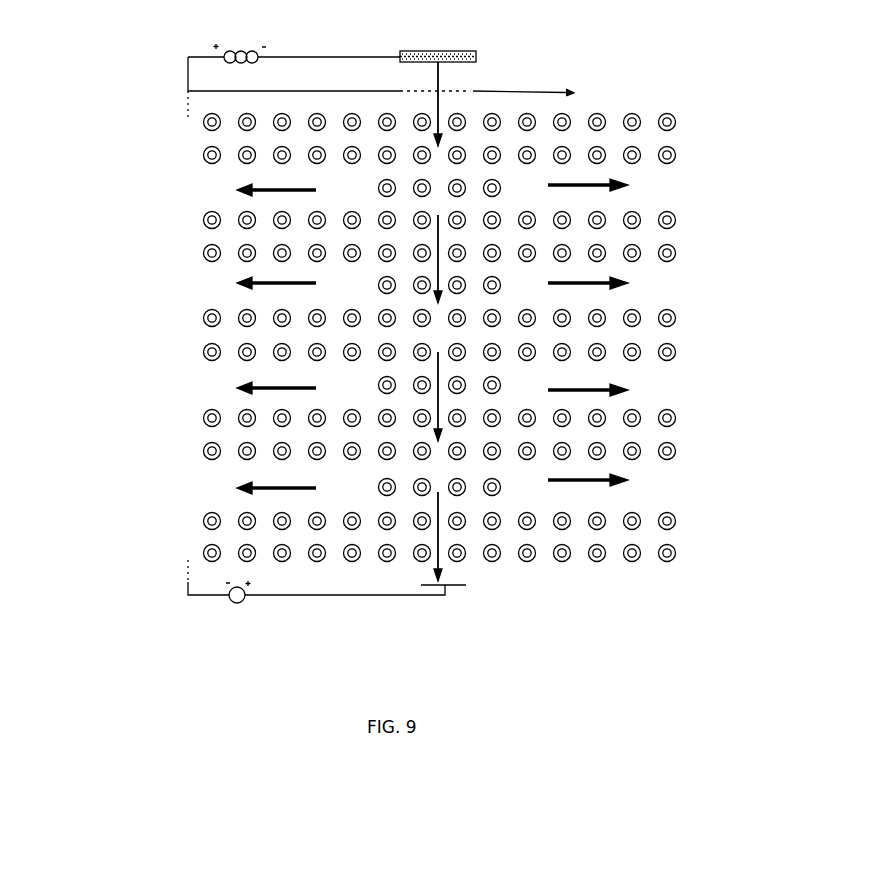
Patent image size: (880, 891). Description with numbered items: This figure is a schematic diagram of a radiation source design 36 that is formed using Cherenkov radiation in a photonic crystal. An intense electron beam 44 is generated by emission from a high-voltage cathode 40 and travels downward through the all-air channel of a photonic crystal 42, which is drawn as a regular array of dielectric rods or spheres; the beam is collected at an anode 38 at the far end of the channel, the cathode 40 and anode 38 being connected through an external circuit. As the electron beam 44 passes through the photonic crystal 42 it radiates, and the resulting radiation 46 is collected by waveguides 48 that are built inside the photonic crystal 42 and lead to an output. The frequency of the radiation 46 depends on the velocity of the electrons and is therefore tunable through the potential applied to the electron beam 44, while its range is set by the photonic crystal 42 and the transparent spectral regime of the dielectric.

The radiation source design 36 is at (130, 680).
The anode 38 is at (470, 594).
The high-voltage cathode 40 is at (436, 44).
The photonic crystal 42 is at (188, 147).
The electron beam 44 is at (415, 299).
The radiation 46 is at (647, 462).
The waveguides 48 is at (177, 348).